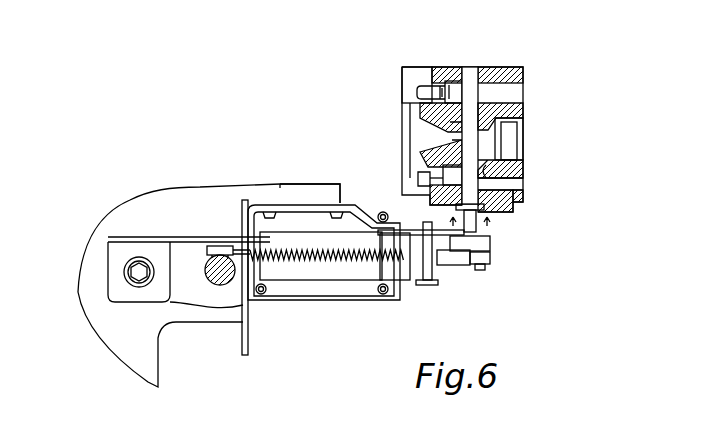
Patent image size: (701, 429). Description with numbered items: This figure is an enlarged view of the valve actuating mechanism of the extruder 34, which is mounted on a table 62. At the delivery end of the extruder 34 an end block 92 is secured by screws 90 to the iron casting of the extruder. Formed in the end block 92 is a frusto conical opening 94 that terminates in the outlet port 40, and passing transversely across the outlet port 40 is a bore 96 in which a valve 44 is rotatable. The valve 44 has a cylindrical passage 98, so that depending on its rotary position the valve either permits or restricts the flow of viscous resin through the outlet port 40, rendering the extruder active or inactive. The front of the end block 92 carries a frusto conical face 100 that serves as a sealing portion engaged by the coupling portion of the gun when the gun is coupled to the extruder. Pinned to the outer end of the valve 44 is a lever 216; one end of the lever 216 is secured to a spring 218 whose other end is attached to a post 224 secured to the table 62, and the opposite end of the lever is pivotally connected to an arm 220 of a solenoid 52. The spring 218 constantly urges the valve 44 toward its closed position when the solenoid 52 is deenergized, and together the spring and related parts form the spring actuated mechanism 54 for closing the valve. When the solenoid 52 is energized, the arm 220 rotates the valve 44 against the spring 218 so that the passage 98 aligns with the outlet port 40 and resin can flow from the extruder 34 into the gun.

The extruder 34 is at (418, 66).
The outlet port 40 is at (448, 90).
The valve 44 is at (478, 94).
The solenoid 52 is at (317, 300).
The spring actuated mechanism 54 is at (316, 171).
The table 62 is at (162, 190).
The screws 90 is at (467, 96).
The end block 92 is at (524, 72).
The frusto conical opening 94 is at (445, 128).
The bore 96 is at (482, 172).
The cylindrical passage 98 is at (443, 166).
The frusto conical face 100 is at (490, 129).
The lever 216 is at (476, 224).
The spring 218 is at (278, 250).
The arm 220 is at (452, 268).
The post 224 is at (218, 286).